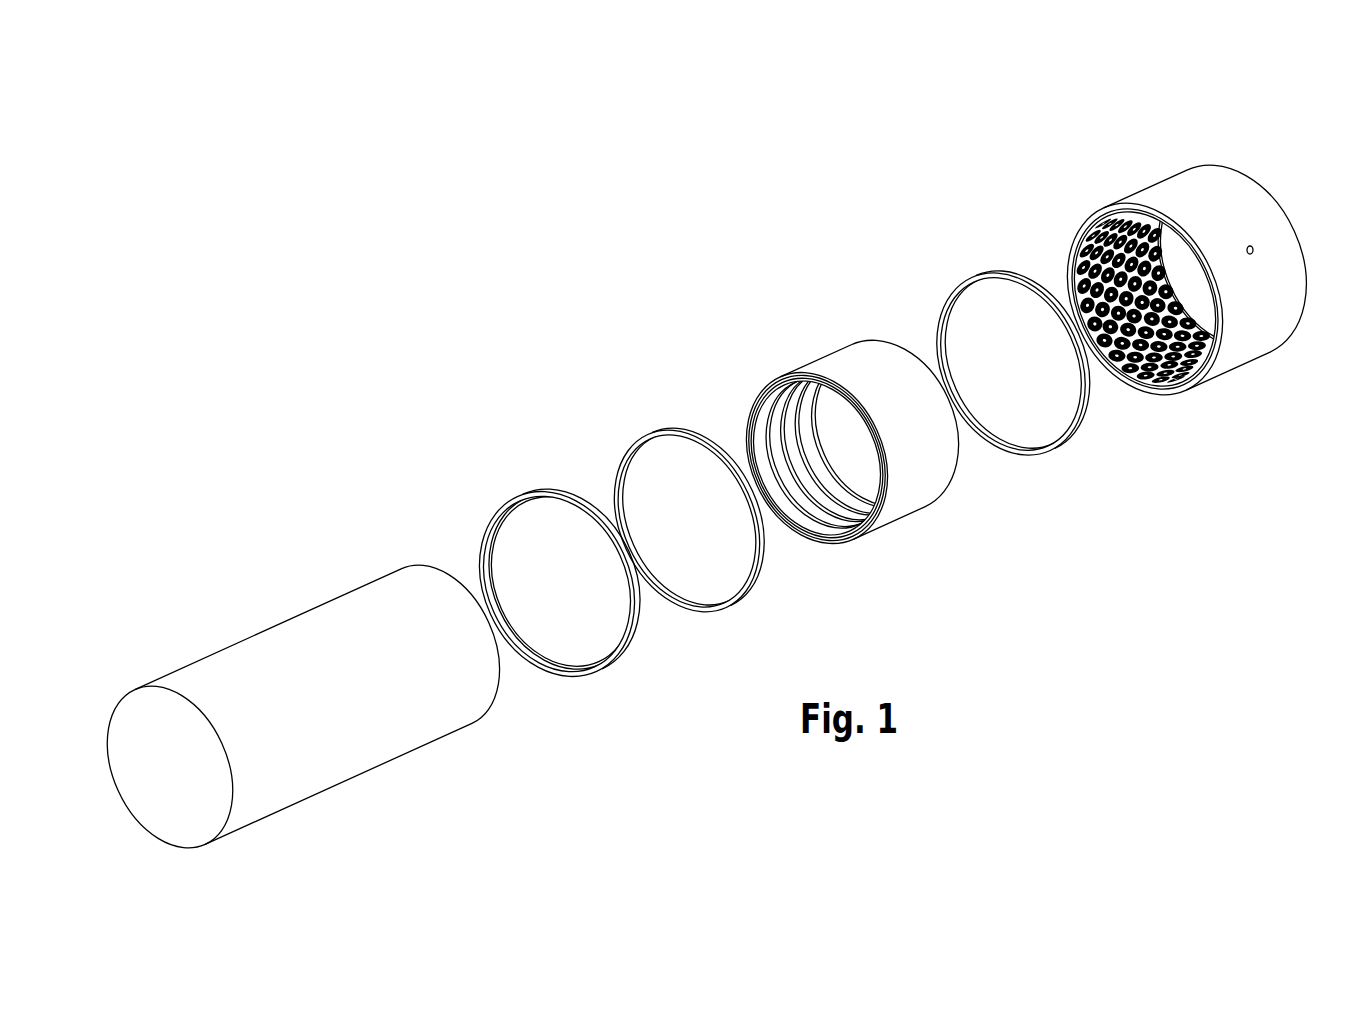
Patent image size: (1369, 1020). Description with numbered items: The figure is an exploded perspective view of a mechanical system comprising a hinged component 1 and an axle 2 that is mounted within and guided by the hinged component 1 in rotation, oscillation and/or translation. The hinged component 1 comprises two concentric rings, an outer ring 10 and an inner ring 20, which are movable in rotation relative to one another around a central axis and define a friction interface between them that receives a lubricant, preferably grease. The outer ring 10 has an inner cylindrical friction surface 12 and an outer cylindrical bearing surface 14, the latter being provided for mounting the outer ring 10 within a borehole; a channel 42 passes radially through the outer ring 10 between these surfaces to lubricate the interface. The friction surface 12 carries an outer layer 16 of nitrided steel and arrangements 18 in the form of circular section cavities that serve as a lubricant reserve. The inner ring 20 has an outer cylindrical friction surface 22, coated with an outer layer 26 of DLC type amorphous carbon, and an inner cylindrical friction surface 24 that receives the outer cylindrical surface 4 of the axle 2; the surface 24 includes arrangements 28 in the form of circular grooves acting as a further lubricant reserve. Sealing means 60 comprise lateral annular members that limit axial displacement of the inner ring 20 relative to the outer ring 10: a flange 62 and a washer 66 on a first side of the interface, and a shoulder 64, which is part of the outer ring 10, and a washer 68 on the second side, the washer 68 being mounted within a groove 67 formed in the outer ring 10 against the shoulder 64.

The hinged component 1 is at (573, 193).
The axle 2 is at (178, 637).
The outer cylindrical surface 4 is at (292, 673).
The outer ring 10 is at (1112, 150).
The inner cylindrical friction surface 12 is at (1083, 232).
The outer cylindrical bearing surface 14 is at (1217, 203).
The outer layer of nitrided steel 16 is at (1073, 258).
The arrangements 18 is at (1083, 287).
The inner ring 20 is at (760, 308).
The outer cylindrical friction surface 22 is at (848, 375).
The inner cylindrical friction surface 24 is at (760, 390).
The outer layer of DLC type amorphous carbon 26 is at (875, 375).
The arrangements 28 is at (767, 430).
The channel 42 is at (1258, 244).
The sealing means 60 is at (535, 427).
The flange 62 is at (578, 677).
The shoulder 64 is at (1188, 310).
The washer 66 is at (718, 607).
The groove 67 is at (1206, 330).
The washer 68 is at (1055, 447).